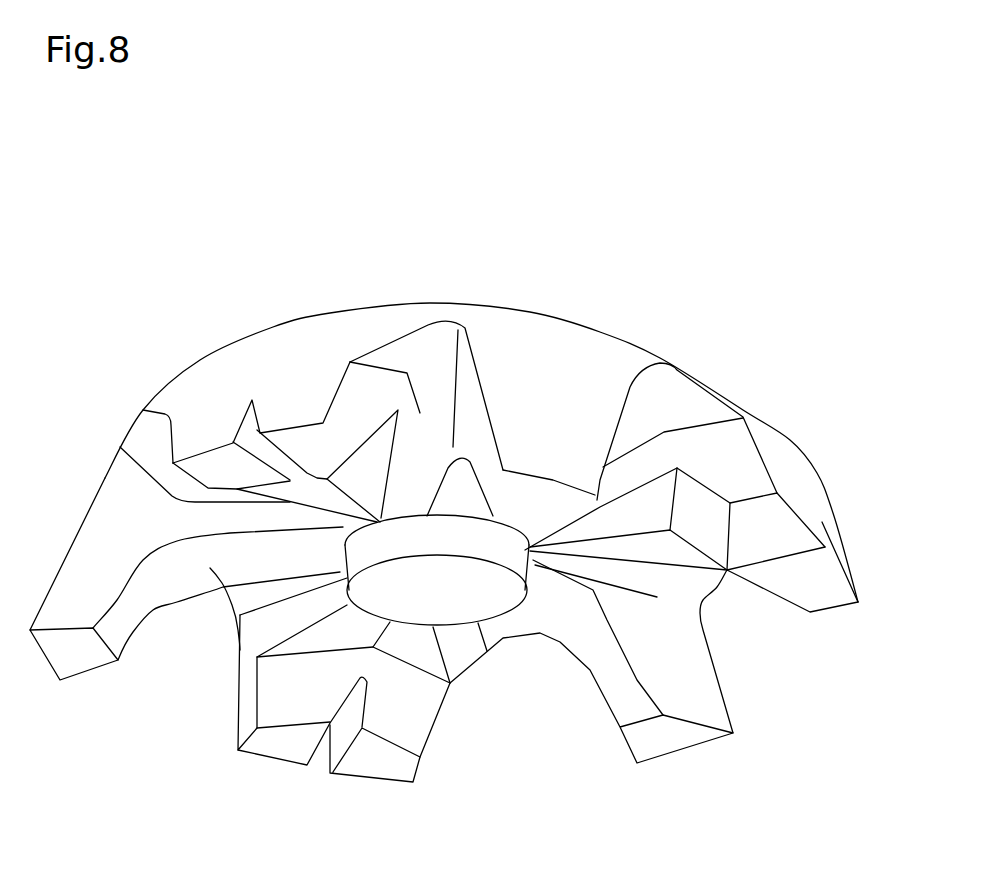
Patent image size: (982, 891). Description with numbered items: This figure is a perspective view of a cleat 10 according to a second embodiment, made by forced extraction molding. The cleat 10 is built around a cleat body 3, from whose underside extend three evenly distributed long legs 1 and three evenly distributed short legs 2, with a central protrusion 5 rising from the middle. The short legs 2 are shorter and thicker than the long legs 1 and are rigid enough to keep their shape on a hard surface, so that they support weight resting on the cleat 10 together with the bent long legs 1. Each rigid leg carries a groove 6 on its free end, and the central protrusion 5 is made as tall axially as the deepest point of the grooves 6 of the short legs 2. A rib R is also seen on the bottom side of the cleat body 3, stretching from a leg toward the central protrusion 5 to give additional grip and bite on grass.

The cleat 10 is at (583, 310).
The long leg 1 is at (660, 748).
The short leg 2 is at (792, 470).
The cleat body 3 is at (275, 343).
The central protrusion 5 is at (460, 608).
The groove 6 is at (320, 760).
The rib R is at (228, 583).